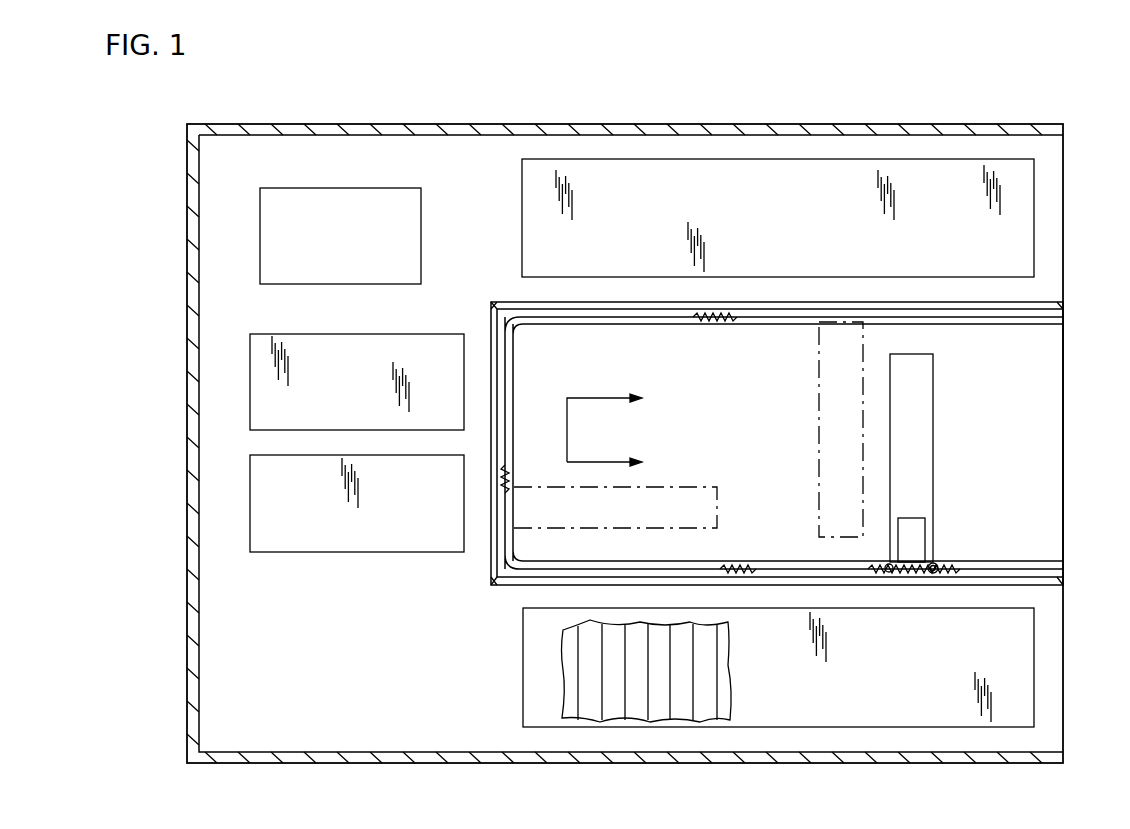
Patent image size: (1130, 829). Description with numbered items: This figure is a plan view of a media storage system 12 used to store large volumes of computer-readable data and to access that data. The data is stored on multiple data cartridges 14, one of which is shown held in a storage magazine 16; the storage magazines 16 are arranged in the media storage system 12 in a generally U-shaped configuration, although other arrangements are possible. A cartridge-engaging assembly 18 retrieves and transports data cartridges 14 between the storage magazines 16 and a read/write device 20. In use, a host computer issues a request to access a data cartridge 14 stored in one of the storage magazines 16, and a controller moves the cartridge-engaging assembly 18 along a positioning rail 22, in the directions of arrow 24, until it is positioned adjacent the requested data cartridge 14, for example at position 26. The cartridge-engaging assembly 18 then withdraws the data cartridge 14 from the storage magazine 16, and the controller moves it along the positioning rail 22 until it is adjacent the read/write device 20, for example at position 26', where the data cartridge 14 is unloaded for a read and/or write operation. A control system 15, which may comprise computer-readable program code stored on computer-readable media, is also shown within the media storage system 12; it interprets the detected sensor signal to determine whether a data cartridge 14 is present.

The media storage system 12 is at (287, 116).
The data cartridge 14 is at (640, 702).
The control system 15 is at (355, 255).
The storage magazine 16 is at (748, 159).
The cartridge-engaging assembly 18 is at (952, 455).
The read/write device 20 is at (277, 455).
The positioning rail 22 is at (1040, 555).
The arrow 24 is at (567, 430).
The position 26 is at (821, 429).
The position 26' is at (628, 491).